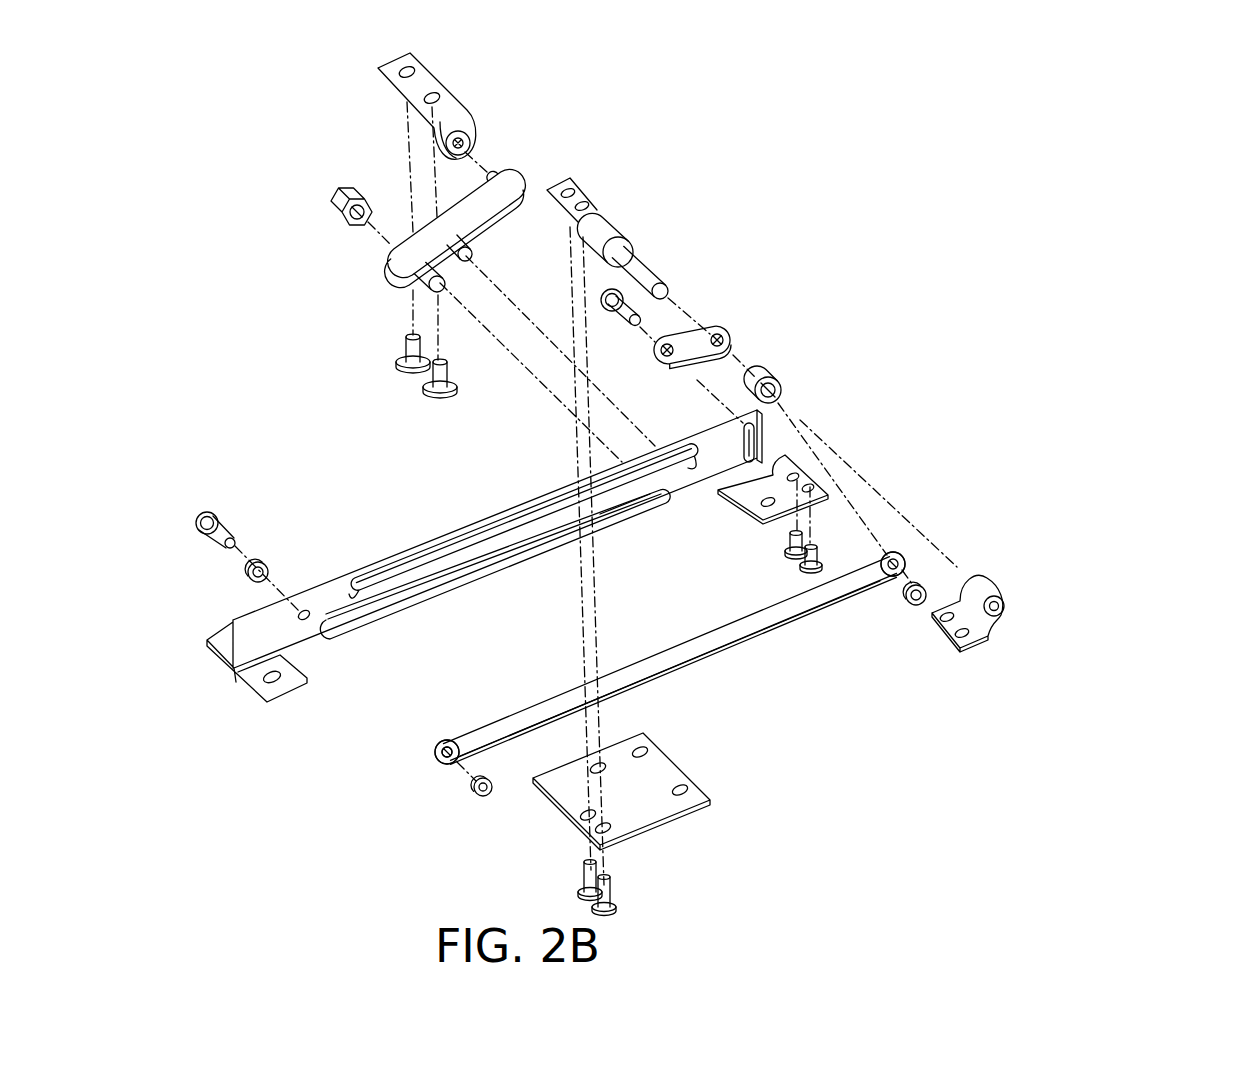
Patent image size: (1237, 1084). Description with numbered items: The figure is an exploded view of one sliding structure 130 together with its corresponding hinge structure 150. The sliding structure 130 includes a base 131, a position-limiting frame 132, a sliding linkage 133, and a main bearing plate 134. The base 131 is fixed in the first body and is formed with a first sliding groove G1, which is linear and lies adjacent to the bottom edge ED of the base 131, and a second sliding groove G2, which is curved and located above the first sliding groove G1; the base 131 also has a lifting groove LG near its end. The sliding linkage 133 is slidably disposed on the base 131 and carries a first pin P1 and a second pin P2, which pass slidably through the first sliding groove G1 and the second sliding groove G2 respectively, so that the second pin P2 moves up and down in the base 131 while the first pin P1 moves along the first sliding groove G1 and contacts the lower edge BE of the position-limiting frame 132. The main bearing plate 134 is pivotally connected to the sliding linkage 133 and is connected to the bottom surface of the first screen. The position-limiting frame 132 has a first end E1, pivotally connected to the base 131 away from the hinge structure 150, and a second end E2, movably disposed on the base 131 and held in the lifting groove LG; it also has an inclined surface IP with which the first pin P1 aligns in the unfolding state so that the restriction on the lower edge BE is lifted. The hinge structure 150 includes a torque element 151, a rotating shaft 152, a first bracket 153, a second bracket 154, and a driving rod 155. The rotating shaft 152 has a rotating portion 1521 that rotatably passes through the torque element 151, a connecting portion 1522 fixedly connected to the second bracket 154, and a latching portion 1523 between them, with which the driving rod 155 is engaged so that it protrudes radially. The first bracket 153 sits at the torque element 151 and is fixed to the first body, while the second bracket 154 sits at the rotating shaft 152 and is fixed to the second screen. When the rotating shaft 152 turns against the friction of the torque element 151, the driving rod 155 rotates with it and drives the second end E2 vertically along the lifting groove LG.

The sliding structure 130 is at (1165, 53).
The base 131 is at (292, 637).
The position-limiting frame 132 is at (708, 650).
The sliding linkage 133 is at (487, 212).
The main bearing plate 134 is at (420, 82).
The hinge structure 150 is at (1165, 197).
The torque element 151 is at (982, 590).
The rotating shaft 152 is at (684, 220).
The rotating portion 1521 is at (652, 272).
The connecting portion 1522 is at (600, 207).
The latching portion 1523 is at (632, 252).
The first bracket 153 is at (768, 512).
The second bracket 154 is at (653, 807).
The driving rod 155 is at (692, 343).
The first pin P1 is at (446, 286).
The second pin P2 is at (472, 250).
The first sliding groove G1 is at (423, 588).
The second sliding groove G2 is at (512, 525).
The lifting groove LG is at (760, 431).
The bottom edge ED is at (643, 522).
The first end E1 is at (442, 742).
The second end E2 is at (903, 556).
The inclined surface IP is at (448, 770).
The lower edge BE is at (733, 658).